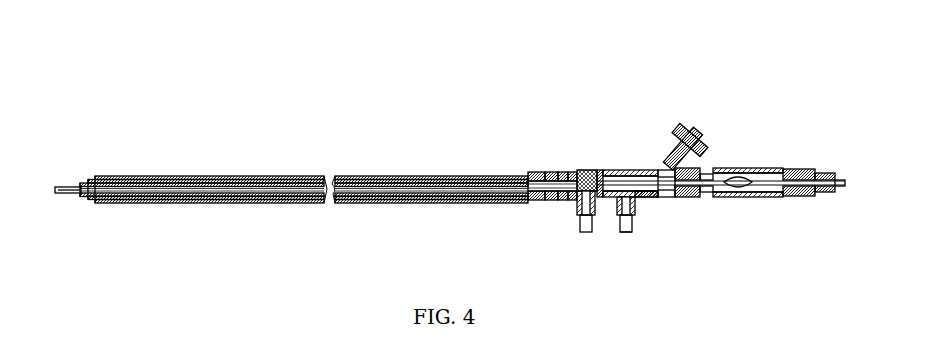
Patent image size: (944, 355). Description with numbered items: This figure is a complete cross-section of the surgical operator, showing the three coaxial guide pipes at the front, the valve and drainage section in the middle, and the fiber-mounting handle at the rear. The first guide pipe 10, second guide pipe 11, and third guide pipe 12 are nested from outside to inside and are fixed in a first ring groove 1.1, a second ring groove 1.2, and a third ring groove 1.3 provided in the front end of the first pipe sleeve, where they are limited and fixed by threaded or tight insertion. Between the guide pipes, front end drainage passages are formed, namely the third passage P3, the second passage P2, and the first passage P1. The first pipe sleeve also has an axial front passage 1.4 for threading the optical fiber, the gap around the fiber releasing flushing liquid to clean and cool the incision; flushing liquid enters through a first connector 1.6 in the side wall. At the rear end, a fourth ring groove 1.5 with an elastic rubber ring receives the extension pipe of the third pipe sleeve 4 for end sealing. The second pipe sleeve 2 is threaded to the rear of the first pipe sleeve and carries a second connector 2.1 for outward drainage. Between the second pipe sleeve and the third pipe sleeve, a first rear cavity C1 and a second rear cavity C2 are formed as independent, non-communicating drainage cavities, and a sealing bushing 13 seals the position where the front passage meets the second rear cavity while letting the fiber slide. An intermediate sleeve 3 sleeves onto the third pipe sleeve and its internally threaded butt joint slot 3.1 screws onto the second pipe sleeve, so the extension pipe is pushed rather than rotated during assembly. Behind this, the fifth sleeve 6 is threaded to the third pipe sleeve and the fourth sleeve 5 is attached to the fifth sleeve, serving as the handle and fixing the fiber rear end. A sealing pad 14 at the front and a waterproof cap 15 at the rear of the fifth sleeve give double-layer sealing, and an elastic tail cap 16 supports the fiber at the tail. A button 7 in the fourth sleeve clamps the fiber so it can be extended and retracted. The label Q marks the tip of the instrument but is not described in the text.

The first ring groove 1.1 is at (548, 172).
The second ring groove 1.2 is at (530, 173).
The third ring groove 1.3 is at (560, 172).
The front passage 1.4 is at (569, 172).
The fourth ring groove 1.5 is at (600, 170).
The first connector 1.6 is at (577, 172).
The second pipe sleeve 2 is at (630, 170).
The second connector 2.1 is at (660, 170).
The intermediate sleeve 3 is at (643, 199).
The butt joint slot 3.1 is at (648, 198).
The third pipe sleeve 4 is at (703, 128).
The fourth sleeve 5 is at (750, 168).
The fifth sleeve 6 is at (690, 198).
The button 7 is at (756, 198).
The first guide pipe 10 is at (494, 199).
The second guide pipe 11 is at (462, 195).
The third guide pipe 12 is at (388, 195).
The sealing bushing 13 is at (592, 170).
The sealing pad 14 is at (680, 199).
The waterproof cap 15 is at (718, 197).
The tail cap 16 is at (822, 198).
The first rear cavity C1 is at (579, 206).
The second rear cavity C2 is at (615, 206).
The first passage P1 is at (131, 181).
The second passage P2 is at (97, 179).
The third passage P3 is at (58, 178).
The tip Q is at (62, 195).